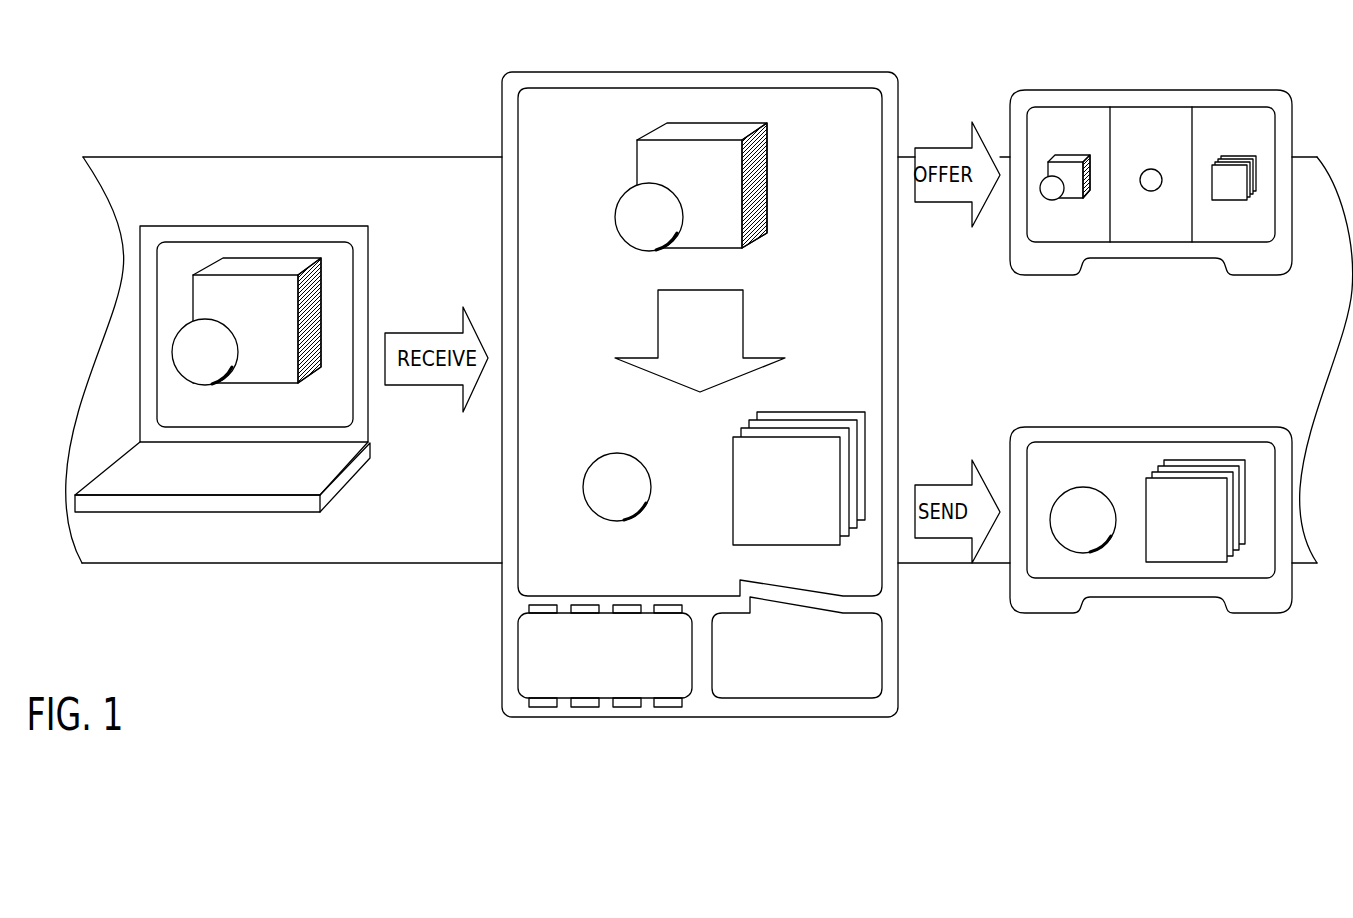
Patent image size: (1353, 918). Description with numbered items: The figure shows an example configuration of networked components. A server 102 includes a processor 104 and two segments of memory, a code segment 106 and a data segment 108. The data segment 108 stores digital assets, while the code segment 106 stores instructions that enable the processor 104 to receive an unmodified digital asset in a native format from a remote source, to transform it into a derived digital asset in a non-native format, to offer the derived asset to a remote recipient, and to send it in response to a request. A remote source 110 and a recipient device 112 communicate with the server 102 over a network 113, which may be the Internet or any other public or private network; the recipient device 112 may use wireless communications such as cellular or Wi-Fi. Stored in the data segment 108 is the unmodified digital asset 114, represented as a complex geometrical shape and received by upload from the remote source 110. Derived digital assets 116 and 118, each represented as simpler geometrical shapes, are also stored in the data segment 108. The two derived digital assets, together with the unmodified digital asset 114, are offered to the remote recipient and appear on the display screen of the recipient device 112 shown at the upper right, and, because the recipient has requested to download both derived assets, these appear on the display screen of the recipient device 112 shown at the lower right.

The server 102 is at (568, 72).
The processor 104 is at (589, 666).
The code segment 106 is at (781, 659).
The data segment 108 is at (518, 258).
The remote source 110 is at (187, 226).
The recipient device 112 is at (1060, 90).
The network 113 is at (188, 563).
The unmodified digital asset 114 is at (614, 183).
The derived digital asset 116 is at (601, 498).
The derived digital asset 118 is at (771, 503).